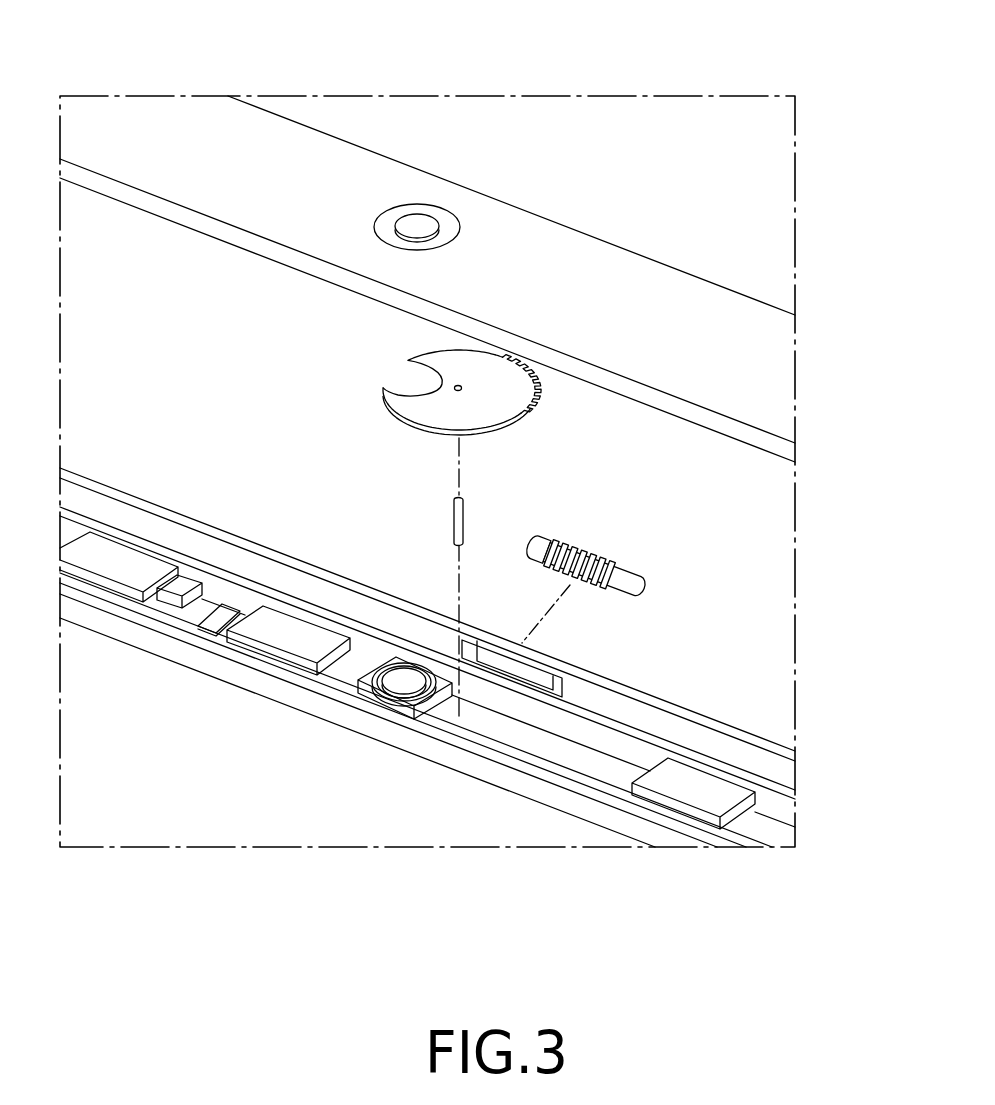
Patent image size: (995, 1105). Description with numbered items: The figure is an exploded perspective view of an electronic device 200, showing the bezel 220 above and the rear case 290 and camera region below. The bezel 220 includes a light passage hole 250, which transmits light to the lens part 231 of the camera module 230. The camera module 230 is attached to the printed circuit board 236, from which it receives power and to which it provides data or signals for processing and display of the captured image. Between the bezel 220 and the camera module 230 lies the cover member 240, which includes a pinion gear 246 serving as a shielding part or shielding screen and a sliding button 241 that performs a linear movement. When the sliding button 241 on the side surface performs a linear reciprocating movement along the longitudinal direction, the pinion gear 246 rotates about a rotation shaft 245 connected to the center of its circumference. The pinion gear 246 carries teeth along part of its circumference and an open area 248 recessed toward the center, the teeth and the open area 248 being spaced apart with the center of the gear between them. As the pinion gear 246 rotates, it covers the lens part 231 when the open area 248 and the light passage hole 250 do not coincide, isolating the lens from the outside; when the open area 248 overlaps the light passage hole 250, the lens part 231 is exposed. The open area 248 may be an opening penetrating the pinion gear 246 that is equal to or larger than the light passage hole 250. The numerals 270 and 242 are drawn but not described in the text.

The electronic device 200 is at (796, 46).
The bezel 220 is at (317, 170).
The light passage hole 250 is at (417, 230).
The cover member 240 is at (880, 363).
The open area 248 is at (413, 382).
The cam gear 270 is at (520, 392).
The pinion gear 246 is at (418, 412).
The rotation shaft 245 is at (465, 512).
The screw thread 242 is at (580, 564).
The sliding button 241 is at (698, 581).
The camera module 230 is at (388, 703).
The lens part 231 is at (399, 689).
The printed circuit board 236 is at (273, 635).
The rear case 290 is at (195, 791).